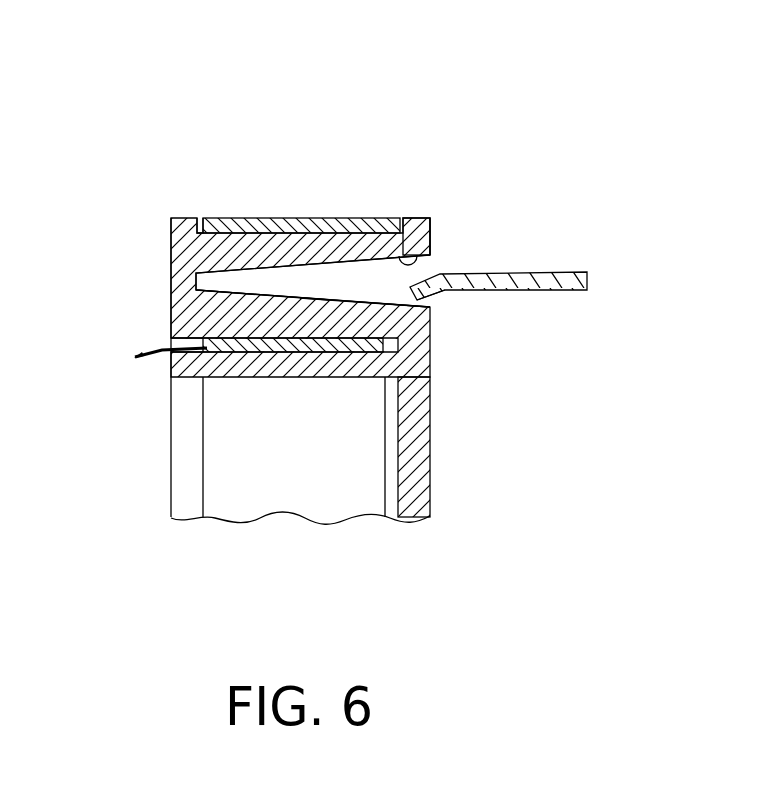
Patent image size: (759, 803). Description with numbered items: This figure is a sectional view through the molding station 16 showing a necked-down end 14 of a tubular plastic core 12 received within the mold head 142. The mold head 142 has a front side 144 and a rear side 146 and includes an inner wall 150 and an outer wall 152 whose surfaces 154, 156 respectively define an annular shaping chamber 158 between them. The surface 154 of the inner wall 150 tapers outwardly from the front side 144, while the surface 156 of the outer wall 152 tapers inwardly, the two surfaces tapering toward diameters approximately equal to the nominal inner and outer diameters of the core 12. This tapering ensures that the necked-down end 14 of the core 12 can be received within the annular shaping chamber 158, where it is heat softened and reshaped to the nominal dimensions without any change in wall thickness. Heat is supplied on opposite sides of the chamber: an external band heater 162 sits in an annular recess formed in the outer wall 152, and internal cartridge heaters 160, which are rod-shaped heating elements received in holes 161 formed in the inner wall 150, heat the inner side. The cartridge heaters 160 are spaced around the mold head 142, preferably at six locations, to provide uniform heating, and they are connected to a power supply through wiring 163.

The molding station 16 is at (131, 186).
The tubular plastic core 12 is at (588, 285).
The end of the core 14 is at (443, 291).
The mold head 142 is at (414, 222).
The front side 144 is at (430, 236).
The rear side 146 is at (171, 272).
The inner wall 150 is at (320, 295).
The outer wall 152 is at (377, 218).
The surface of the inner wall 154 is at (281, 292).
The surface of the outer wall 156 is at (408, 256).
The annular shaping chamber 158 is at (243, 282).
The cartridge heaters 160 is at (348, 350).
The holes 161 is at (172, 340).
The band heater 162 is at (213, 226).
The wiring 163 is at (155, 352).